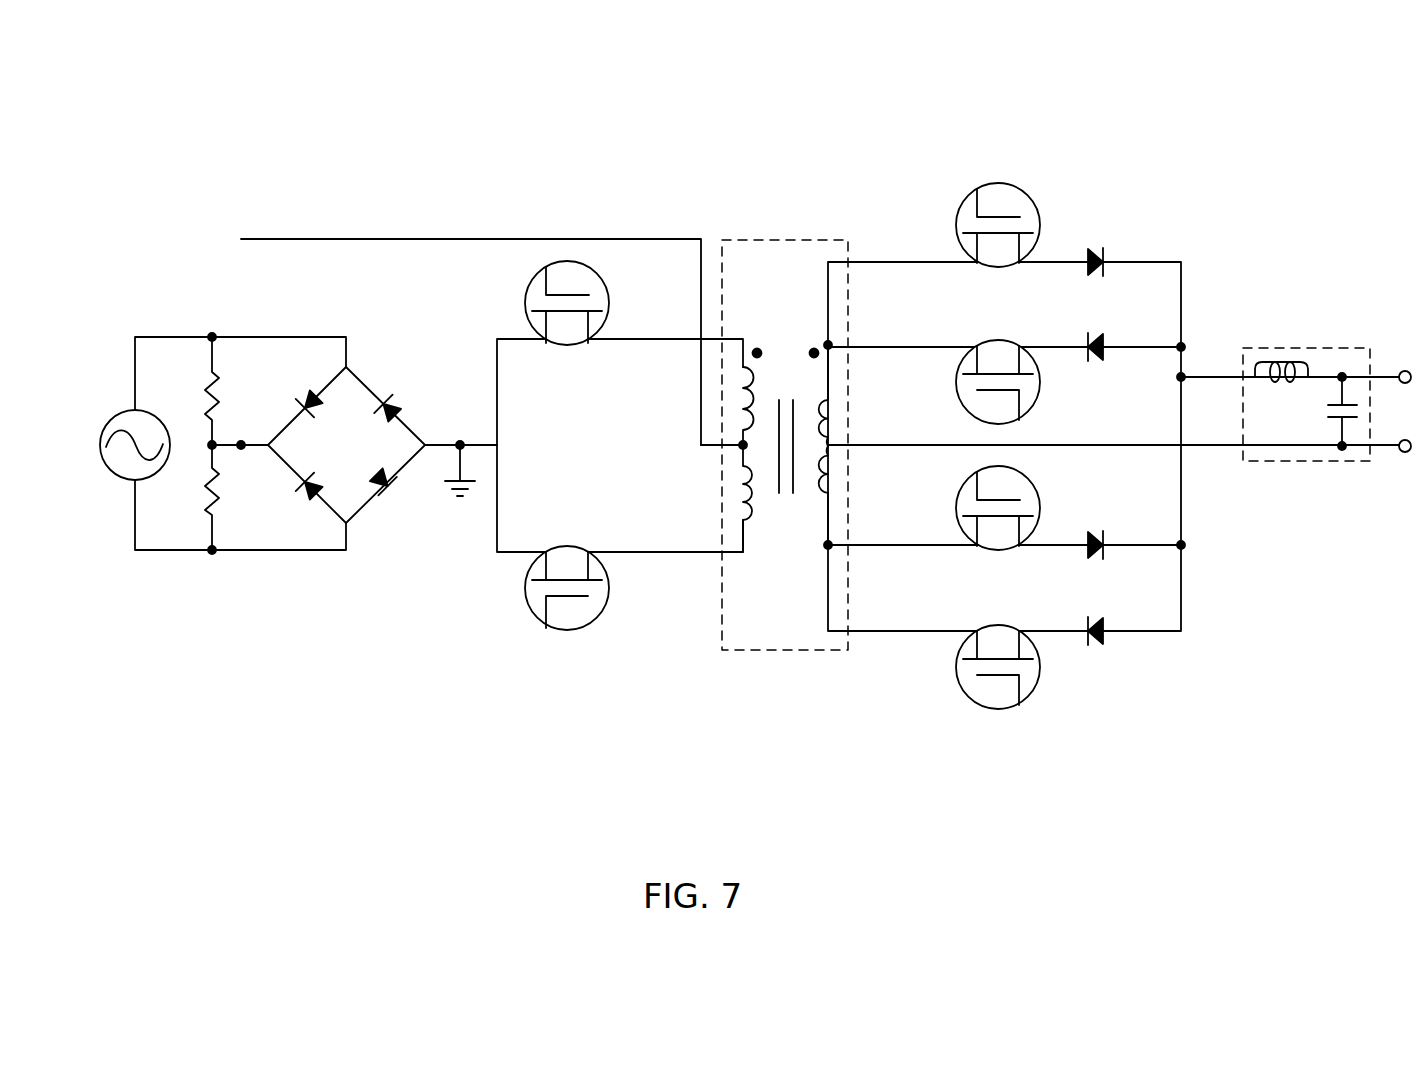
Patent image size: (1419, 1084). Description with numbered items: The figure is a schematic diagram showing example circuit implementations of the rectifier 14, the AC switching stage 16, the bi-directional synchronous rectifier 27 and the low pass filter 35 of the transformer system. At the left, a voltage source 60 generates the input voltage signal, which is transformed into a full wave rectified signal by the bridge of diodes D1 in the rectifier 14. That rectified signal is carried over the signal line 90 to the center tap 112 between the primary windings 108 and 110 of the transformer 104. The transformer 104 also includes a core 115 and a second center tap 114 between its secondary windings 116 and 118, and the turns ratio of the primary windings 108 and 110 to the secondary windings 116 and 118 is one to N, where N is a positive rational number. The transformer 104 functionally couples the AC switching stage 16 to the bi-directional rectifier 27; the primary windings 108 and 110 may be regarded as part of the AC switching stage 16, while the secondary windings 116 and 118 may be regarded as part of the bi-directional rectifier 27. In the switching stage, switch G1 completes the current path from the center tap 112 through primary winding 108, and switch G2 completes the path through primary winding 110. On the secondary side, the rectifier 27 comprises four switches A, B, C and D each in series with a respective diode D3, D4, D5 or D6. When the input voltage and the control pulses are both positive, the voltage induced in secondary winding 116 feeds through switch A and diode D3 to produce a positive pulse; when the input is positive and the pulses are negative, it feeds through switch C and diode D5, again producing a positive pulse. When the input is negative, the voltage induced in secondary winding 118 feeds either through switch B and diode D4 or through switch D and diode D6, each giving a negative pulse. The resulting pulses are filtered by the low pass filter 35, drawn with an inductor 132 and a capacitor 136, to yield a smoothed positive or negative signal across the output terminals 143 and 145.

The rectifier 14 is at (280, 499).
The AC switching stage 16 is at (506, 479).
The bi-directional synchronous rectifier 27 is at (1105, 472).
The low pass filter 35 is at (1325, 462).
The voltage source 60 is at (120, 412).
The signal line 90 is at (495, 238).
The transformer 104 is at (785, 240).
The primary winding 108 is at (757, 365).
The primary winding 110 is at (757, 515).
The center tap 112 is at (742, 446).
The center tap 114 is at (828, 445).
The core 115 is at (793, 400).
The secondary winding 116 is at (833, 428).
The secondary winding 118 is at (817, 487).
The output inductor 132 is at (1278, 360).
The output capacitor 136 is at (1333, 418).
The output terminal 143 is at (1402, 370).
The output terminal 145 is at (1372, 482).
The diodes D1 is at (300, 400).
The diode D3 is at (1093, 250).
The diode D4 is at (1097, 338).
The diode D5 is at (1095, 533).
The diode D6 is at (1097, 628).
The switch A is at (1022, 192).
The switch B is at (1030, 406).
The switch C is at (1030, 482).
The switch D is at (1007, 625).
The switch G1 is at (530, 283).
The switch G2 is at (540, 598).